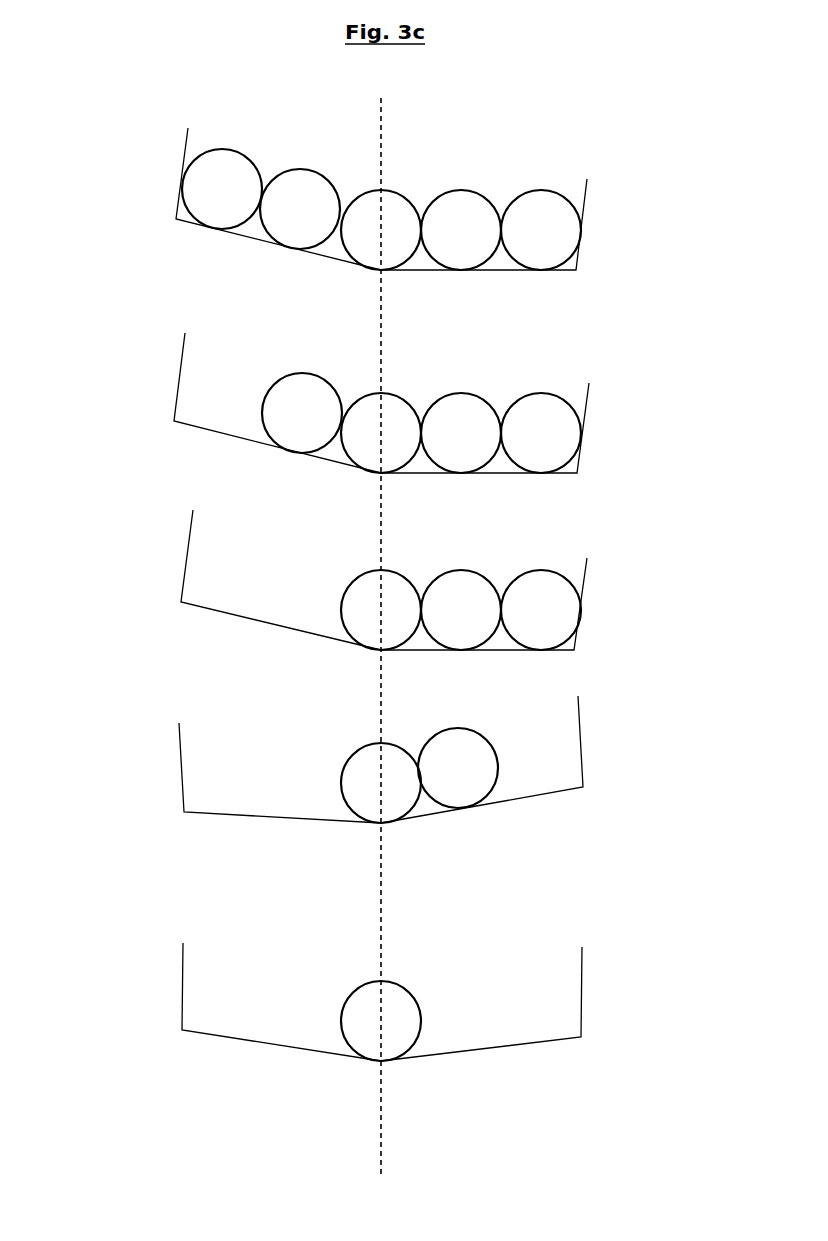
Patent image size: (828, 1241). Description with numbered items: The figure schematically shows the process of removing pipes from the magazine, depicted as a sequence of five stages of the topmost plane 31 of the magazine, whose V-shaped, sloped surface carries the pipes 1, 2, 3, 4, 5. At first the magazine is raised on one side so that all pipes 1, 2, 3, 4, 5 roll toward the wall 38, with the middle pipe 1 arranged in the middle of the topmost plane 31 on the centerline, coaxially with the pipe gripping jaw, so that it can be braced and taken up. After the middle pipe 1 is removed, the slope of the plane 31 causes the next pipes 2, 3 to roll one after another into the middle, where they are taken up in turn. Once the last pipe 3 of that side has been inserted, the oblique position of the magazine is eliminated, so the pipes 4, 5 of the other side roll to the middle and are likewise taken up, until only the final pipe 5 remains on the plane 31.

The topmost plane 31 is at (160, 173).
The wall 38 is at (587, 197).
The pipe 1 is at (381, 230).
The pipe 2 is at (340, 321).
The pipe 3 is at (301, 399).
The pipe 4 is at (421, 506).
The pipe 5 is at (461, 625).